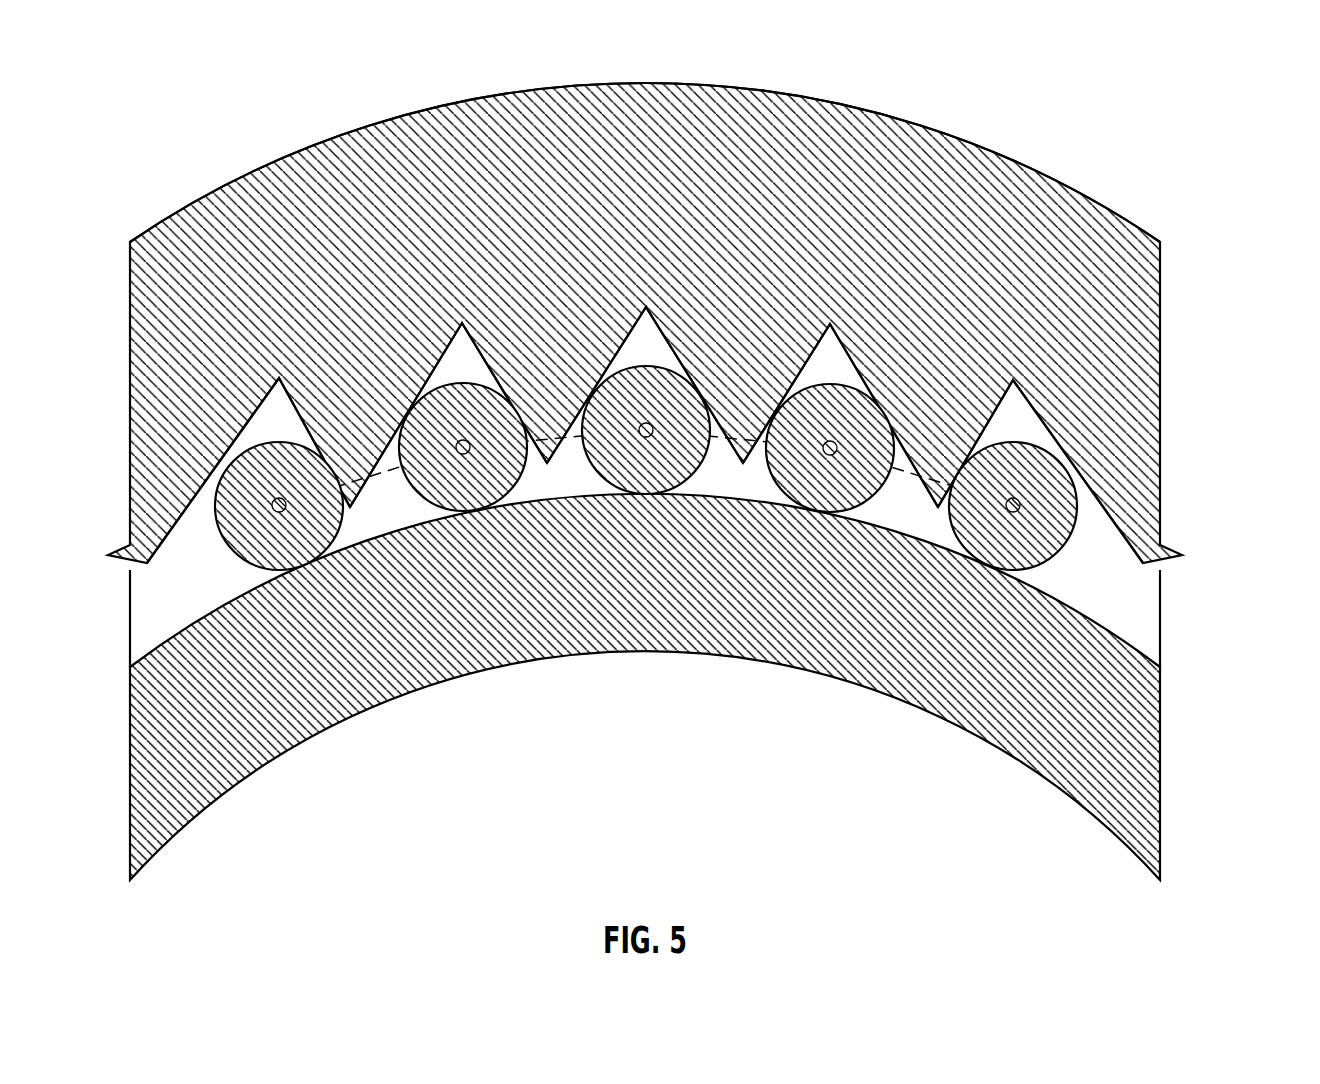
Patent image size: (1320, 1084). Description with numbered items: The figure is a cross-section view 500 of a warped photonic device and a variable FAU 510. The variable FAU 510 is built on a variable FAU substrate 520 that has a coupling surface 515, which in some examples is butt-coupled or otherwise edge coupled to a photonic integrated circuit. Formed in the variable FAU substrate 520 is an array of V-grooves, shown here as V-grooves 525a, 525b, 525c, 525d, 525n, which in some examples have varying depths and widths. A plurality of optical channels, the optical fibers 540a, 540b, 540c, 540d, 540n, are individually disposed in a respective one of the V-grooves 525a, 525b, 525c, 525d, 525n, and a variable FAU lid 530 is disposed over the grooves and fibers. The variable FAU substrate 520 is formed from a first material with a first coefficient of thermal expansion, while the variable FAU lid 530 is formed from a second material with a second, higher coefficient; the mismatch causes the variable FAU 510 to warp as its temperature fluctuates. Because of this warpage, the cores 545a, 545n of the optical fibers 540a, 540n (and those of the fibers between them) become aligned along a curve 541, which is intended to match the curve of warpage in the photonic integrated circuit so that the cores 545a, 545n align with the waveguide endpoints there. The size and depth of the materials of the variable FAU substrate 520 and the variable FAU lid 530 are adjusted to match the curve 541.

The cross-section view 500 is at (701, 461).
The variable FAU 510 is at (1200, 278).
The coupling surface 515 is at (512, 224).
The variable FAU substrate 520 is at (1123, 272).
The V-groove 525a is at (279, 425).
The V-groove 525b is at (466, 368).
The V-groove 525c is at (648, 352).
The V-groove 525d is at (833, 362).
The V-groove 525n is at (1022, 420).
The variable FAU lid 530 is at (735, 602).
The optical fiber 540a is at (305, 487).
The optical fiber 540b is at (489, 427).
The optical fiber 540c is at (672, 412).
The optical fiber 540d is at (855, 427).
The optical fiber 540n is at (1043, 487).
The curve 541 is at (925, 480).
The core 545a is at (277, 513).
The core 545n is at (1013, 513).